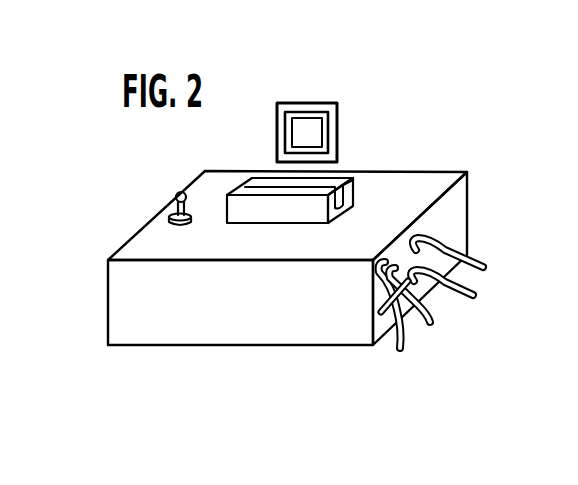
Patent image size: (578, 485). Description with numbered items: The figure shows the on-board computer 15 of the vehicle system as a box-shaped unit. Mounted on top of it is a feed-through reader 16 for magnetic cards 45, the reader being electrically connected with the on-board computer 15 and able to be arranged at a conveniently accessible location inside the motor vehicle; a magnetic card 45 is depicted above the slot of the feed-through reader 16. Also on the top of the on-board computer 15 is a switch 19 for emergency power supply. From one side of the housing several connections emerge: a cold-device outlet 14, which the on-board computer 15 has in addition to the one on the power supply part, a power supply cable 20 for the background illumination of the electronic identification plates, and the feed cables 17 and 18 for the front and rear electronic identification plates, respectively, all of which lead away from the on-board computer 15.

The cold-device outlet 14 is at (466, 302).
The on-board computer 15 is at (445, 216).
The feed-through reader 16 is at (344, 174).
The feed cable 17 is at (428, 328).
The feed cable 18 is at (397, 347).
The switch 19 is at (176, 197).
The power supply cable 20 is at (482, 258).
The magnetic card 45 is at (338, 128).